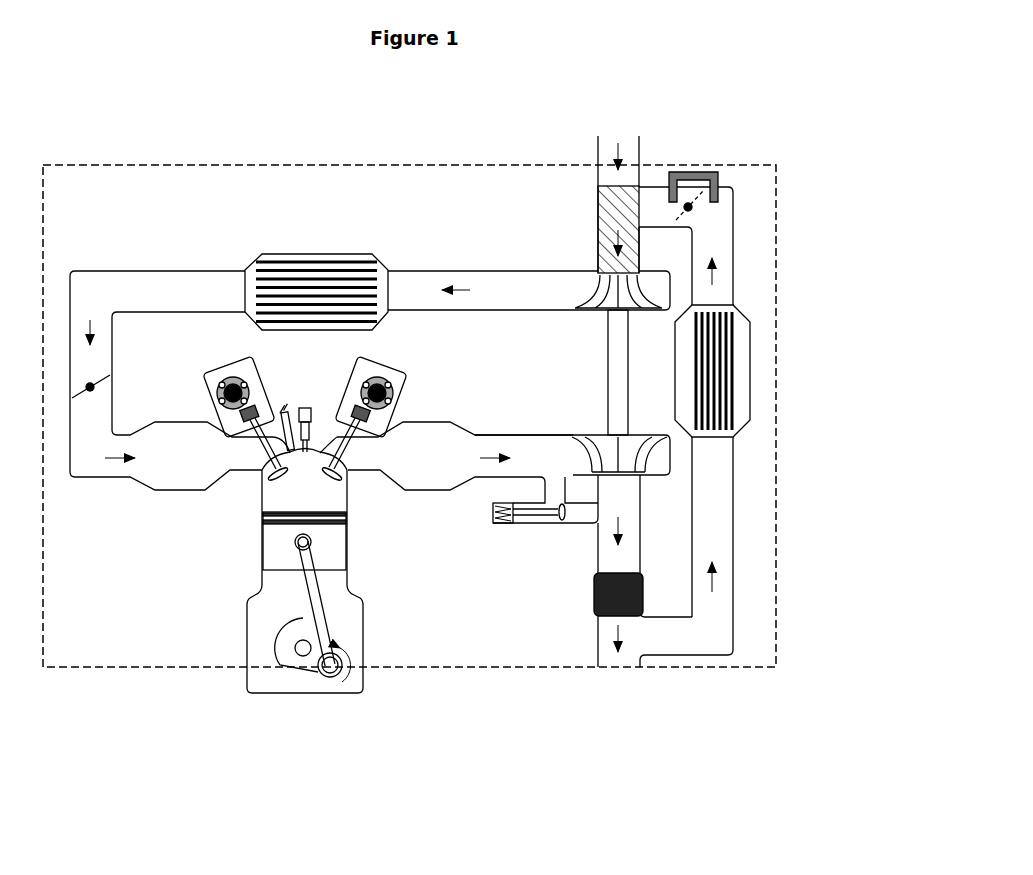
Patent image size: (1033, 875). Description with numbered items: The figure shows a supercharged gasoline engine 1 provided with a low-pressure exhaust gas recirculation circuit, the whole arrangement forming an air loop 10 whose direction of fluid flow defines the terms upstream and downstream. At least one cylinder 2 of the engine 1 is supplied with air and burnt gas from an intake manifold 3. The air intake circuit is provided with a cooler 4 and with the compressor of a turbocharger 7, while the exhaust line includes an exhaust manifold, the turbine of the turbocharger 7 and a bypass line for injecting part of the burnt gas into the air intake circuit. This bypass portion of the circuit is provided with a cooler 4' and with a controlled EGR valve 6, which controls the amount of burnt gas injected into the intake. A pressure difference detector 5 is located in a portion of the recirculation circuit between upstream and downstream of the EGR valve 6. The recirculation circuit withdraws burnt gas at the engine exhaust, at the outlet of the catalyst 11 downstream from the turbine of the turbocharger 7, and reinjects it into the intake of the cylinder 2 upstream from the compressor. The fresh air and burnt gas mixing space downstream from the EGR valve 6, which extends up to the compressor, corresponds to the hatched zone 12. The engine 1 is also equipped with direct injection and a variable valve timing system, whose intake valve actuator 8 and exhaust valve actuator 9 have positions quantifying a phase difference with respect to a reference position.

The gasoline engine 1 is at (172, 749).
The cylinder 2 is at (360, 545).
The intake manifold 3 is at (172, 494).
The cooler 4 is at (318, 241).
The cooler 4' is at (755, 407).
The pressure difference detector 5 is at (690, 186).
The EGR valve 6 is at (706, 210).
The turbocharger 7 is at (621, 390).
The intake valve actuator 8 is at (215, 372).
The exhaust valve actuator 9 is at (388, 372).
The air loop 10 is at (513, 669).
The catalyst 11 is at (590, 607).
The hatched zone 12 is at (607, 215).